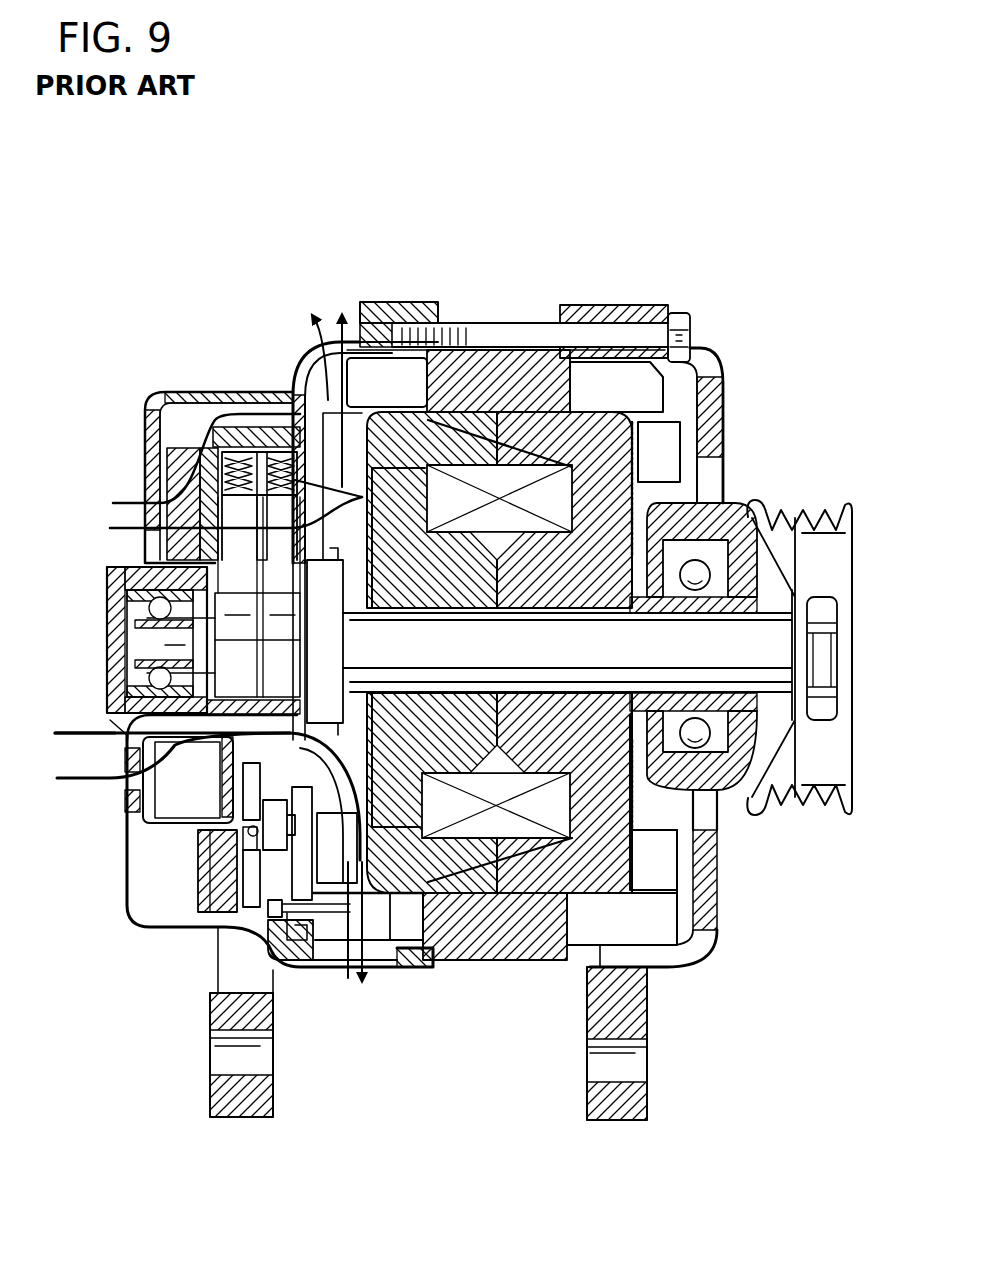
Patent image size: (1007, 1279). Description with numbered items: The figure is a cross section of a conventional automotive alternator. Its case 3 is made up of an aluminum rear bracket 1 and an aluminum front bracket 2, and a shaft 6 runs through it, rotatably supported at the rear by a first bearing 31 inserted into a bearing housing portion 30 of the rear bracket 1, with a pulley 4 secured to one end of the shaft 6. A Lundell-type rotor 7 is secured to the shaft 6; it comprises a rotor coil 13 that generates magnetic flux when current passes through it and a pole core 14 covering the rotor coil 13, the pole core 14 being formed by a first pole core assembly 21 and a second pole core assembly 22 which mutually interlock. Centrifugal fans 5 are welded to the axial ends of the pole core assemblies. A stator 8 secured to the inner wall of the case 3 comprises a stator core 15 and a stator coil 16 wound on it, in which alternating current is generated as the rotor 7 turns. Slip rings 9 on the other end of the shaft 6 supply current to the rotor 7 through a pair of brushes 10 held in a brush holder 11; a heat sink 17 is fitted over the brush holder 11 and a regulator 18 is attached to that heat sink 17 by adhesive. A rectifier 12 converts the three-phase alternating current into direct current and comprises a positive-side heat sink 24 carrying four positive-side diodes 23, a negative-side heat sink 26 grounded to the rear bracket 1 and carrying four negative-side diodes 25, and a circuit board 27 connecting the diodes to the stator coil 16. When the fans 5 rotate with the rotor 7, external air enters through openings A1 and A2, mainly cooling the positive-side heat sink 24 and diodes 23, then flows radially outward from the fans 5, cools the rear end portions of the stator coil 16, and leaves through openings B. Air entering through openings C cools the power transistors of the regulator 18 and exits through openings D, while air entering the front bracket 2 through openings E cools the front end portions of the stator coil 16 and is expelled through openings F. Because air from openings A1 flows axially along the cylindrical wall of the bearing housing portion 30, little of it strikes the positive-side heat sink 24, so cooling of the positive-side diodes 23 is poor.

The rear bracket 1 is at (221, 433).
The front bracket 2 is at (710, 683).
The case 3 is at (246, 647).
The pulley 4 is at (843, 507).
The centrifugal fans 5 is at (366, 395).
The shaft 6 is at (777, 656).
The rotor 7 is at (617, 735).
The stator 8 is at (557, 649).
The slip rings 9 is at (230, 640).
The brushes 10 is at (241, 450).
The brush holder 11 is at (268, 440).
The rectifier 12 is at (193, 885).
The rotor coil 13 is at (550, 860).
The pole core 14 is at (660, 880).
The stator core 15 is at (510, 375).
The stator coil 16 is at (627, 383).
The heat sink 17 is at (170, 490).
The regulator 18 is at (178, 393).
The first pole core assembly 21 is at (700, 940).
The second pole core assembly 22 is at (413, 966).
The positive-side diodes 23 is at (253, 780).
The positive-side heat sink 24 is at (170, 807).
The negative-side diodes 25 is at (273, 840).
The negative-side heat sink 26 is at (220, 885).
The circuit board 27 is at (285, 940).
The bearing housing portion 30 is at (140, 572).
The first bearing 31 is at (138, 608).
The openings A1 is at (110, 720).
The openings A2 is at (128, 790).
The openings B is at (322, 970).
The openings C is at (148, 447).
The openings D is at (352, 440).
The openings E is at (700, 860).
The openings F is at (658, 970).